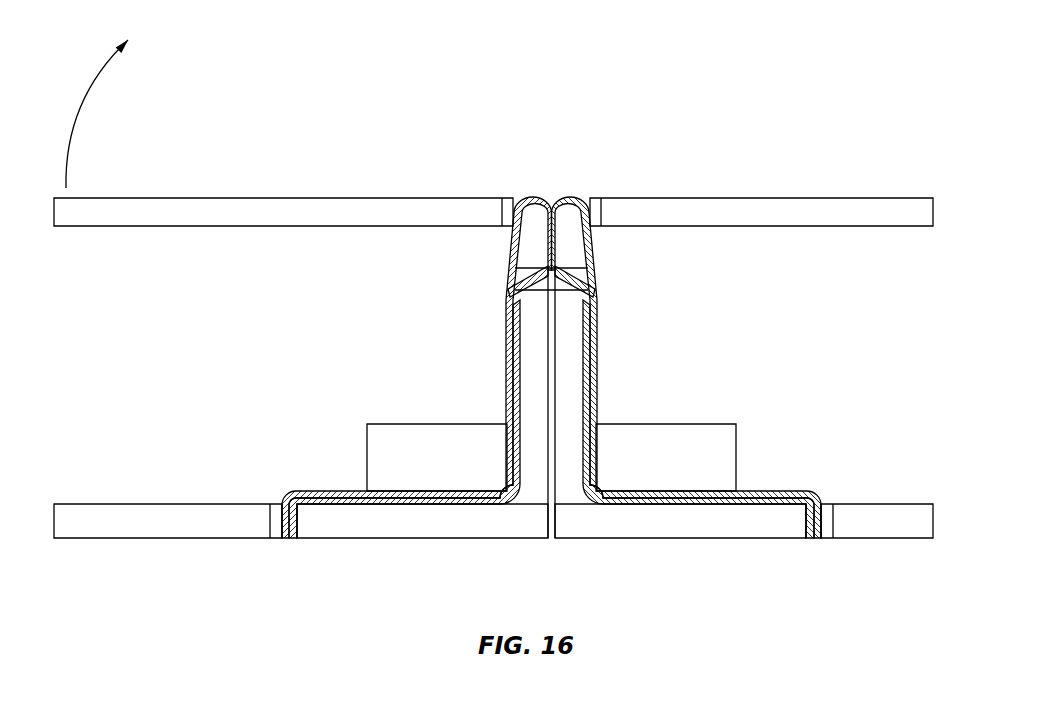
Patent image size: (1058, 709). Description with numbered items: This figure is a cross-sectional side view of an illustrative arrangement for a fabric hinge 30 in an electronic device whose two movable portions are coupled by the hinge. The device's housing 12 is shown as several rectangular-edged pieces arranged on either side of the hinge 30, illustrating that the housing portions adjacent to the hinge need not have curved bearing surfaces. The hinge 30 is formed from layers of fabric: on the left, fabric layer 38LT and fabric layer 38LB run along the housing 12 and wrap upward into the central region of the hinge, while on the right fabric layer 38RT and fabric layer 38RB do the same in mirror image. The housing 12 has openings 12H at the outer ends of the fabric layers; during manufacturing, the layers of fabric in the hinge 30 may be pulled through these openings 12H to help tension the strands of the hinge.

The housing 12 is at (252, 227).
The openings 12H is at (290, 550).
The hinge 30 is at (550, 176).
The fabric layer 38LT is at (332, 491).
The fabric layer 38LB is at (347, 505).
The fabric layer 38RT is at (790, 491).
The fabric layer 38RB is at (708, 505).